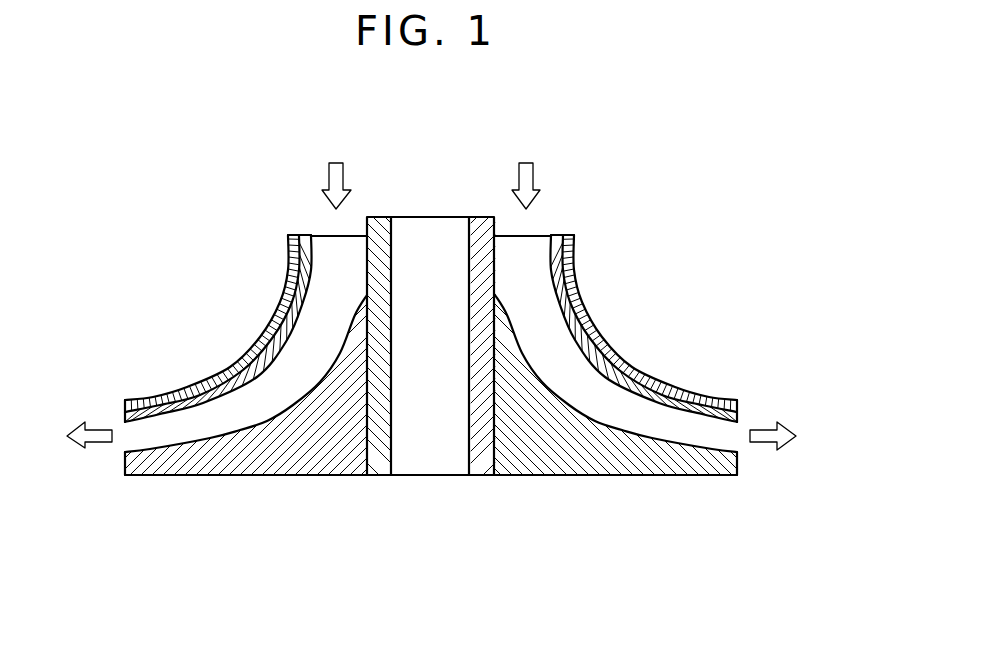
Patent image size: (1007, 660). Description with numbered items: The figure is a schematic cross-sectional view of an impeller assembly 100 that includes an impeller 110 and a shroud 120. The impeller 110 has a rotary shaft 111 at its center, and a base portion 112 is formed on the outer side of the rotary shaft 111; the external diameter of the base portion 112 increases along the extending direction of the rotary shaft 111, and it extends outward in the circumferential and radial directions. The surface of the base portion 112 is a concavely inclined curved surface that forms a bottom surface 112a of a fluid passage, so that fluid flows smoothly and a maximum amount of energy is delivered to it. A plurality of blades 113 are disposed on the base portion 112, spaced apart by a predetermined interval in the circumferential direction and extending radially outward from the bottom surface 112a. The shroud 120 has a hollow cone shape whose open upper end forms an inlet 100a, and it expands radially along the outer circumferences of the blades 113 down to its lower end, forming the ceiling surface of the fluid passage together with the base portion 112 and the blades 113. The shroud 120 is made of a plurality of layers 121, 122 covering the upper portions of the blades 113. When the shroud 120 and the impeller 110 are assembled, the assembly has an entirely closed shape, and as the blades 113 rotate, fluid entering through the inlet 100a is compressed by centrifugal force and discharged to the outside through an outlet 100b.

The impeller assembly 100 is at (707, 191).
The inlet 100a is at (527, 248).
The outlet 100b is at (732, 442).
The impeller 110 is at (298, 547).
The rotary shaft 111 is at (382, 467).
The base portion 112 is at (222, 463).
The bottom surface 112a is at (277, 407).
The blades 113 is at (157, 435).
The shroud 120 is at (167, 325).
The layer 121 is at (147, 412).
The layer 122 is at (188, 392).